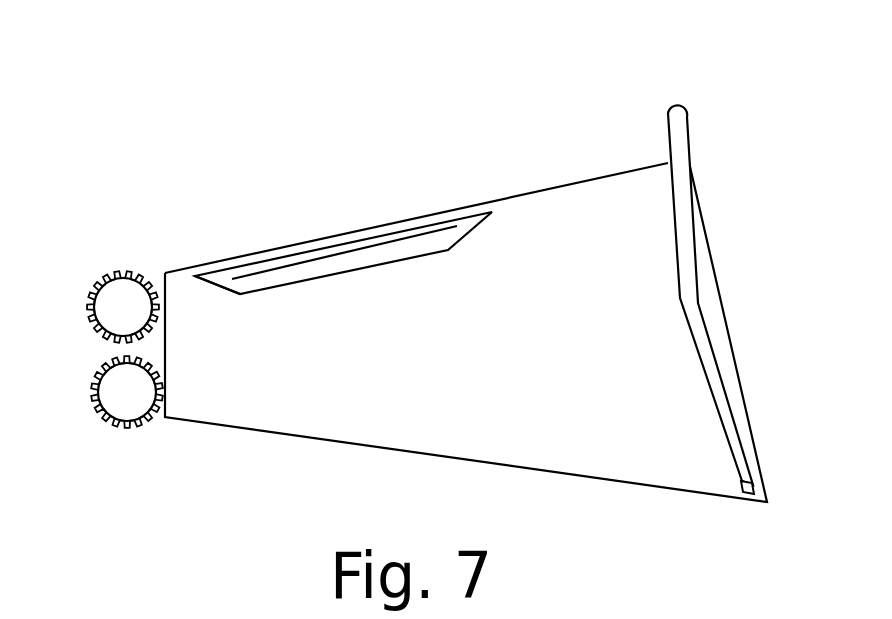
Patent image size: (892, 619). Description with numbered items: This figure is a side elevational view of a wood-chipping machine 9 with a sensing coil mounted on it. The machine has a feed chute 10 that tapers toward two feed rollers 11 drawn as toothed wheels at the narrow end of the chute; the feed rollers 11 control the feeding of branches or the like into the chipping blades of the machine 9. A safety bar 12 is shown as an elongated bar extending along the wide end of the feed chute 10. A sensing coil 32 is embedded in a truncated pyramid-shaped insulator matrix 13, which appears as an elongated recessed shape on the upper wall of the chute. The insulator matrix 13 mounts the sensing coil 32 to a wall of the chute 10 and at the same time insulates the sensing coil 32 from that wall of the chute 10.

The wood-chipping machine 9 is at (772, 500).
The feed chute 10 is at (722, 277).
The feed rollers 11 is at (110, 362).
The safety bar 12 is at (678, 118).
The insulator matrix 13 is at (218, 278).
The sensing coil 32 is at (441, 232).